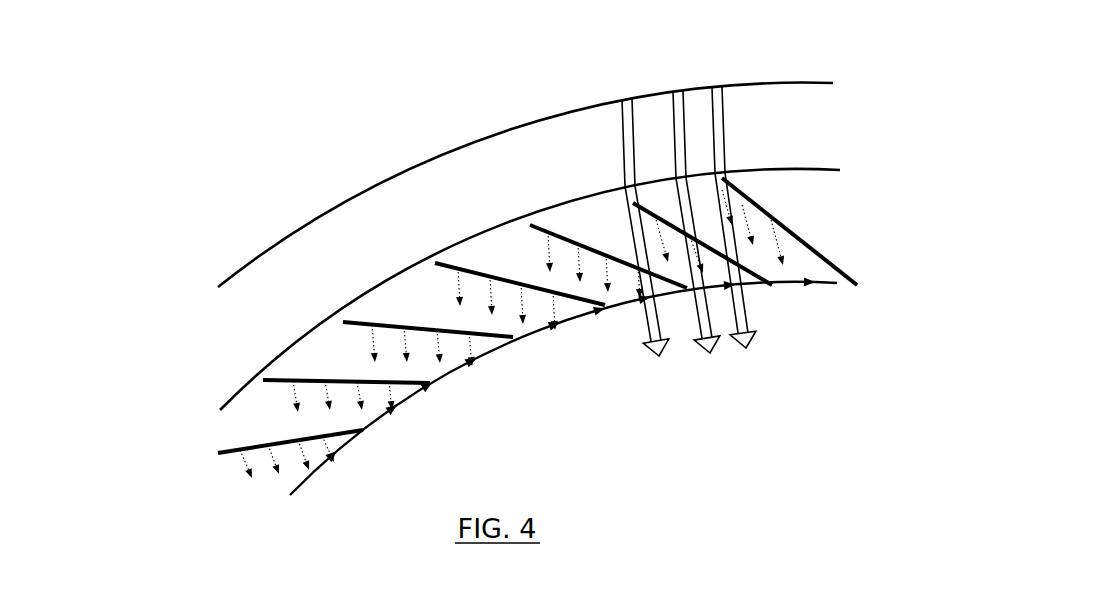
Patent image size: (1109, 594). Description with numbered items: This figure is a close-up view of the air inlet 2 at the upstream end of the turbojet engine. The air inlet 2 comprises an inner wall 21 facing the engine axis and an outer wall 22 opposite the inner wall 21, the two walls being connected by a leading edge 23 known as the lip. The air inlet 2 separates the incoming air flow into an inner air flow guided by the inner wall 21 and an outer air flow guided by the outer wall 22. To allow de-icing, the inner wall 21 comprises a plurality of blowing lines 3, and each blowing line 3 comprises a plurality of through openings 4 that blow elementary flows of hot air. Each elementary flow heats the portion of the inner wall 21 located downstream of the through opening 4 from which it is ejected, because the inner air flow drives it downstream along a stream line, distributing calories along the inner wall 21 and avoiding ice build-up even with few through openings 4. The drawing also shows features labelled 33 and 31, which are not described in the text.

The air inlet 2 is at (503, 218).
The outer wall 22 is at (782, 108).
The inner wall 21 is at (800, 185).
The leading edge 23 is at (830, 167).
The first vane 33 is at (220, 450).
The blowing line 3 is at (517, 353).
The vane trailing edge line 31 is at (365, 432).
The through opening 4 is at (494, 367).